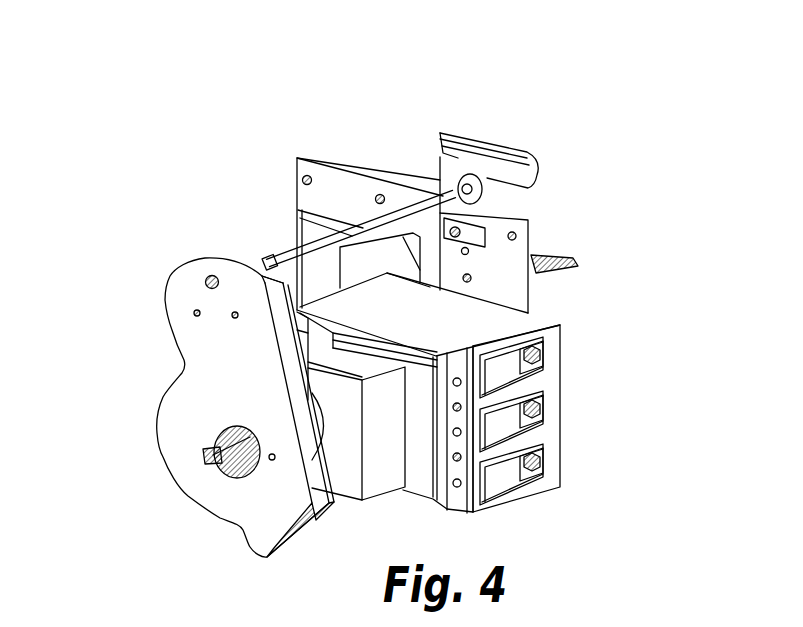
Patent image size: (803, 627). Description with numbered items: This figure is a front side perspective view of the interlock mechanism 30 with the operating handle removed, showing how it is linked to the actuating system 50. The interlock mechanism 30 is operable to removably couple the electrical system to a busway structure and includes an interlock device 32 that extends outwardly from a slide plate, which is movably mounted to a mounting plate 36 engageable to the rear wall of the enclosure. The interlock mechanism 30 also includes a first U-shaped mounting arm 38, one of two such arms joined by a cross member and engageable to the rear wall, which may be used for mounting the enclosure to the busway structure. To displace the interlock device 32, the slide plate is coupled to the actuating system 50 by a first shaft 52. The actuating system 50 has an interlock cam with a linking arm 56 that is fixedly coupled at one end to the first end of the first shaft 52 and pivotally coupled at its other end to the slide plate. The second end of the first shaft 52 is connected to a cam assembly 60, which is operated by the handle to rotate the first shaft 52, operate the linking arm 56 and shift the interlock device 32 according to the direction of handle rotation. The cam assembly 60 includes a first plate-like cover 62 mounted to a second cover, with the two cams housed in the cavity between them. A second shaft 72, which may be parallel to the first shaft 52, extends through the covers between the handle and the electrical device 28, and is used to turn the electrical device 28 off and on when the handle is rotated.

The electrical device 28 is at (566, 433).
The interlock mechanism 30 is at (492, 198).
The interlock device 32 is at (575, 257).
The mounting plate 36 is at (313, 158).
The first U-shaped mounting arm 38 is at (503, 147).
The actuating system 50 is at (335, 222).
The first shaft 52 is at (278, 250).
The linking arm 56 is at (483, 192).
The cam assembly 60 is at (188, 411).
The first plate-like cover 62 is at (187, 327).
The second shaft 72 is at (238, 480).